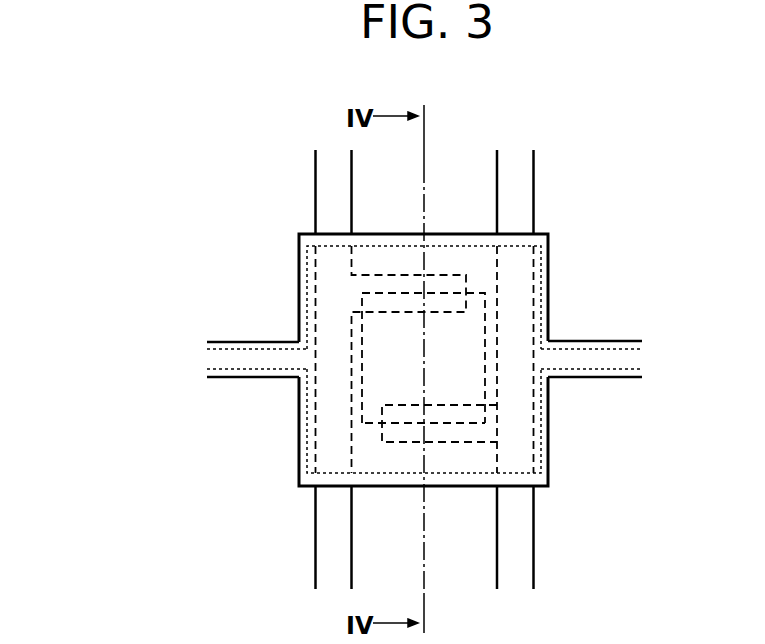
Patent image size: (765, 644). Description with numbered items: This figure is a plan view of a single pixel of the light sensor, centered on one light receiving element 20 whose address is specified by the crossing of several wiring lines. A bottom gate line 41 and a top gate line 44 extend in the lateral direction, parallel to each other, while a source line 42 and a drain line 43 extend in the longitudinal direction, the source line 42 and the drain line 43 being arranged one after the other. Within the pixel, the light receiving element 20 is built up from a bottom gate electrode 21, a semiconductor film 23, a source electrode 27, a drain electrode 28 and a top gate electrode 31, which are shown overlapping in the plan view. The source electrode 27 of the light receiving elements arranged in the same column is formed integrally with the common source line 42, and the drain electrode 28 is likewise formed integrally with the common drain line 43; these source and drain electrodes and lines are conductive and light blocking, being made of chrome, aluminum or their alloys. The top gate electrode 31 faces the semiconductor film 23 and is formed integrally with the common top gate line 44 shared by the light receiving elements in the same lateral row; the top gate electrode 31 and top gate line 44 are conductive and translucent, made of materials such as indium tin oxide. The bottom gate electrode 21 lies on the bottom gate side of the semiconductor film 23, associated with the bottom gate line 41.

The light receiving element 20 is at (270, 302).
The bottom gate electrode 21 is at (472, 473).
The semiconductor film 23 is at (440, 425).
The source electrode 27 is at (404, 444).
The drain electrode 28 is at (388, 275).
The top gate electrode 31 is at (447, 233).
The bottom gate line 41 is at (594, 349).
The source line 42 is at (527, 178).
The drain line 43 is at (325, 181).
The top gate line 44 is at (628, 379).